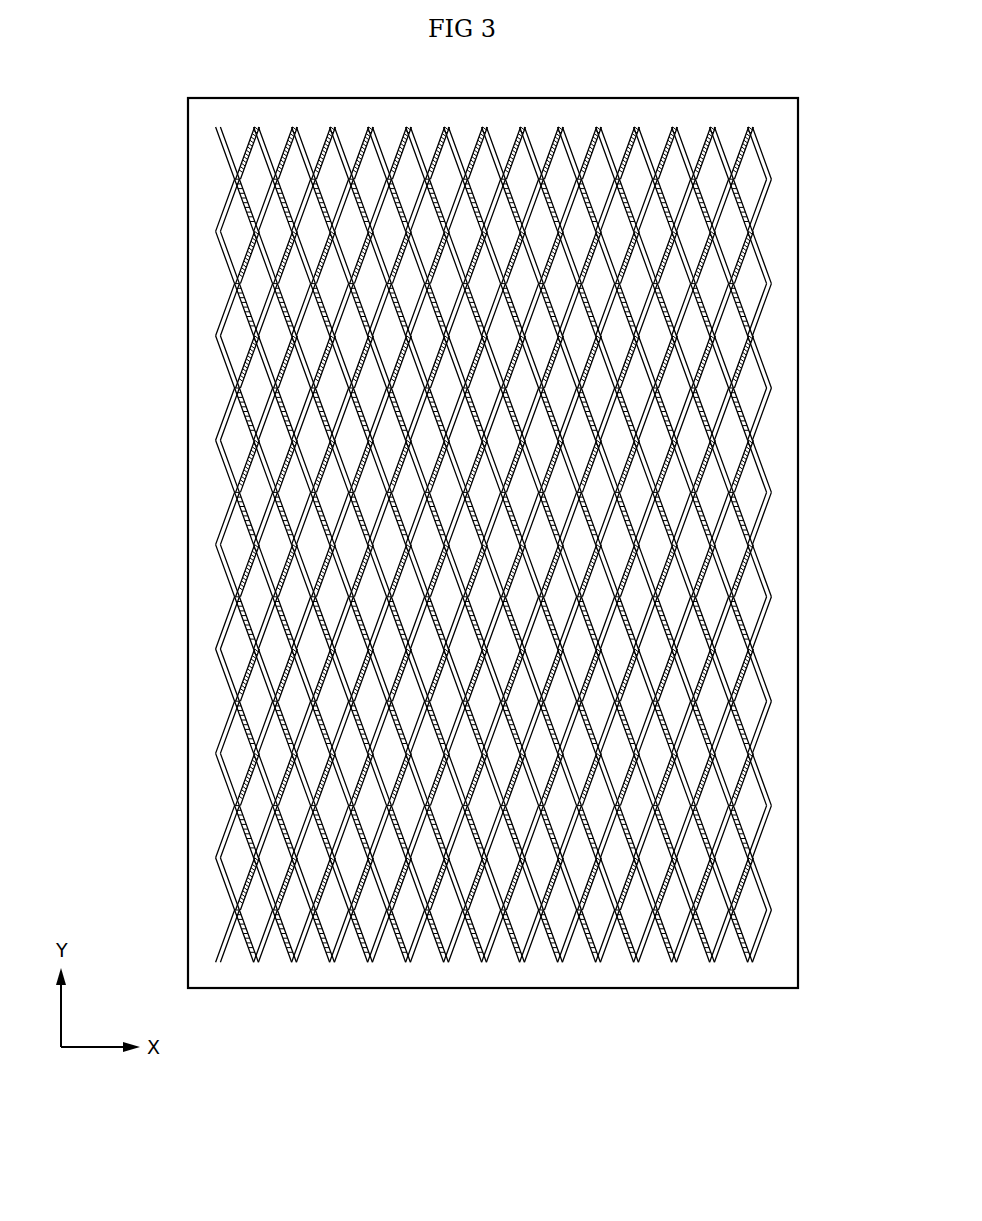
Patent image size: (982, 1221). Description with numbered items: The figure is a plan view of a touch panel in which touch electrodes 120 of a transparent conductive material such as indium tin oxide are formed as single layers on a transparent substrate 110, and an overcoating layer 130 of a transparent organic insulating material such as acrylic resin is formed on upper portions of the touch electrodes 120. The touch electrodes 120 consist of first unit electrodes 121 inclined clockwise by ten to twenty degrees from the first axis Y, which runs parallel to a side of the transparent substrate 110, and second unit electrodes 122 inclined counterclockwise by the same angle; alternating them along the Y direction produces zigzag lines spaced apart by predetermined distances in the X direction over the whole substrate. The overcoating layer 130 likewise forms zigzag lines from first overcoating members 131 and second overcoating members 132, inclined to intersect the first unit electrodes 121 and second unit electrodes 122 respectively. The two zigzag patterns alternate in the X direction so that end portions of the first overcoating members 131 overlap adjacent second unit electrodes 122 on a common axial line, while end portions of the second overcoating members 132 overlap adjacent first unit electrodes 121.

The transparent substrate 110 is at (783, 652).
The touch electrodes 120 is at (434, 544).
The first unit electrodes 121 is at (228, 929).
The second unit electrodes 122 is at (228, 885).
The overcoating layer 130 is at (551, 544).
The first overcoating members 131 is at (735, 935).
The second overcoating members 132 is at (735, 888).